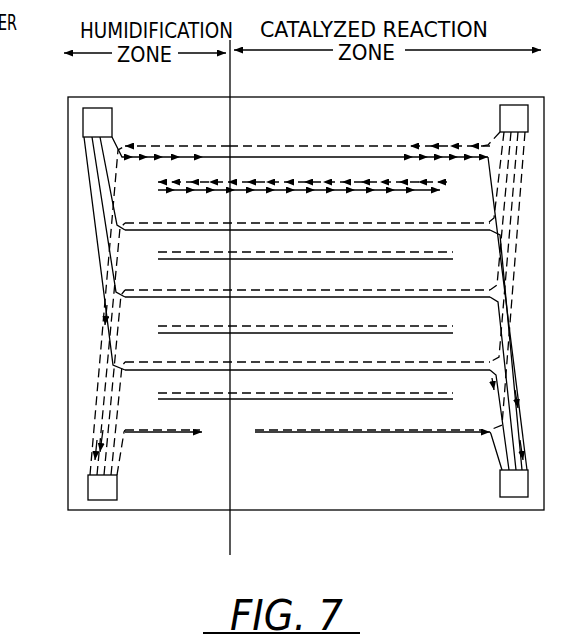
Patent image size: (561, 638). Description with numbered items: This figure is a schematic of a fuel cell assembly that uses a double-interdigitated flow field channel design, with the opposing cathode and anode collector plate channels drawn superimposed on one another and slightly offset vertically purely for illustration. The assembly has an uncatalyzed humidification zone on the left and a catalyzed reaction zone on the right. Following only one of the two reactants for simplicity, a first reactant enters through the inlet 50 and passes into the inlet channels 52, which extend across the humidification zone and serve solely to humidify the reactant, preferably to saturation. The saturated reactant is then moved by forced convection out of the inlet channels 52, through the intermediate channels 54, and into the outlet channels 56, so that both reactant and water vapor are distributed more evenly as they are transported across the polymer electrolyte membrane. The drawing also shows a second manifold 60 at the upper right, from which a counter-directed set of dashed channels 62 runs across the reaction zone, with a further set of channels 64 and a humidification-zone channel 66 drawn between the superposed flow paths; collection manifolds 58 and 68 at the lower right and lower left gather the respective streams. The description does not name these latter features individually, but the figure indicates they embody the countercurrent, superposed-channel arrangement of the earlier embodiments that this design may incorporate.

The inlet 50 is at (95, 122).
The inlet channels 52 is at (173, 433).
The intermediate channels 54 is at (220, 398).
The outlet channels 56 is at (322, 432).
The outlet manifold 58 is at (515, 490).
The oxidant inlet manifold 60 is at (517, 113).
The oxidant flow passage 62 is at (397, 145).
The counterflow channel pair 64 is at (303, 182).
The humidification flow passage 66 is at (180, 146).
The outlet manifold 68 is at (102, 487).